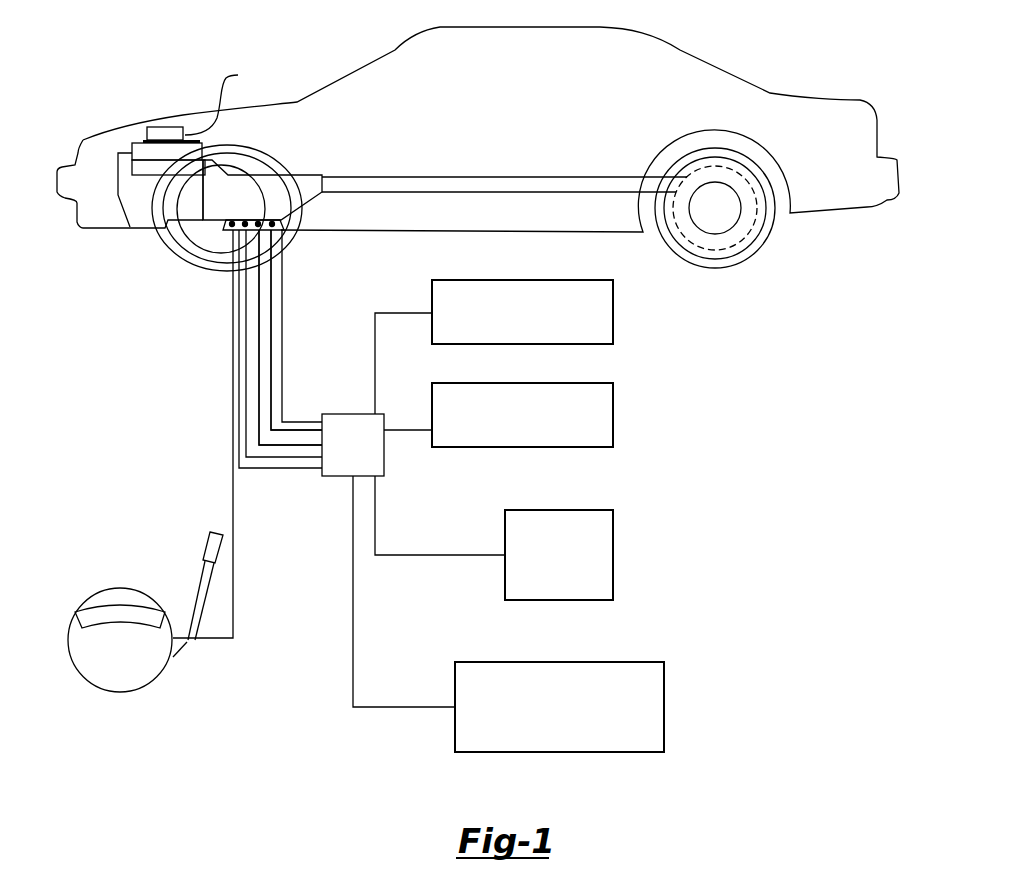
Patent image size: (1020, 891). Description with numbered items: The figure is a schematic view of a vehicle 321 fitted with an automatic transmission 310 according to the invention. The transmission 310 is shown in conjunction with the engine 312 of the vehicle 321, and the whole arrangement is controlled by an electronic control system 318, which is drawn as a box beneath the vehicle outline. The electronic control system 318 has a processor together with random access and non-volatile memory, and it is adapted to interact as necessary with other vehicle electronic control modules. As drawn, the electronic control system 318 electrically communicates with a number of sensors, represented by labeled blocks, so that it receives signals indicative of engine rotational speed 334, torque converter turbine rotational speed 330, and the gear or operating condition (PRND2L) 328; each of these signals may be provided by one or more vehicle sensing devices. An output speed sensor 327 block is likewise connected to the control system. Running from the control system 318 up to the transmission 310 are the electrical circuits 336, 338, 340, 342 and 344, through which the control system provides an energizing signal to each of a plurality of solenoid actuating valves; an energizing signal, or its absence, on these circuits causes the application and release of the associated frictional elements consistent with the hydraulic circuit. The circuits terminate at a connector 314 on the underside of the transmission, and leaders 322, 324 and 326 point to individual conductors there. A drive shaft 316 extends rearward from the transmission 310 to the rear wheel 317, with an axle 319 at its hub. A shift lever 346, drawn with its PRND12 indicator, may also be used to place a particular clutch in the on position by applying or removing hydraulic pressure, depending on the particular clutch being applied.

The automatic transmission 310 is at (303, 182).
The engine 312 is at (150, 155).
The connector 314 is at (284, 224).
The drive shaft 316 is at (352, 183).
The rear wheel 317 is at (768, 238).
The electronic control system 318 is at (337, 477).
The axle 319 is at (723, 180).
The vehicle 321 is at (673, 52).
The wire 322 is at (240, 231).
The wire 324 is at (260, 230).
The wire 326 is at (272, 230).
The output speed sensor 327 is at (664, 703).
The gear or operating condition signal 328 is at (613, 313).
The torque converter turbine rotational speed signal 330 is at (613, 413).
The engine rotational speed signal 334 is at (613, 552).
The electrical circuit 336 is at (311, 356).
The electrical circuit 338 is at (170, 135).
The electrical circuit 340 is at (283, 468).
The electrical circuit 342 is at (233, 485).
The electrical circuit 344 is at (282, 323).
The shift lever 346 is at (127, 672).